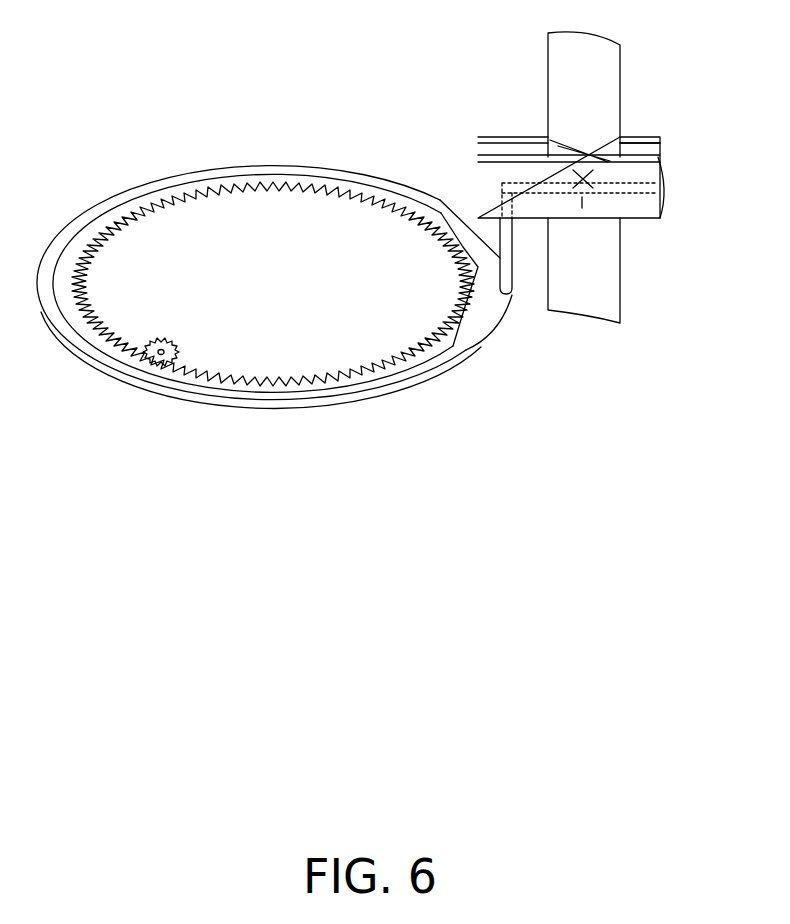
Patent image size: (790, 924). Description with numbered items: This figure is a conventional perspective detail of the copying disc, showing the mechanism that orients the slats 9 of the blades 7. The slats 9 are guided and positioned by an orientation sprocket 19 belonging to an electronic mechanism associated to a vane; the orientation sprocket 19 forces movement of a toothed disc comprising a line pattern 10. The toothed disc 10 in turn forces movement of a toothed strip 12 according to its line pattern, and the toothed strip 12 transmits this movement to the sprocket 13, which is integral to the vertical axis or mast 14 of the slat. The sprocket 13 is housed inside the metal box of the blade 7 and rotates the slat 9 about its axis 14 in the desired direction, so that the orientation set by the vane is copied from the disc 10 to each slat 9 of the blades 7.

The toothed disc comprising a line pattern 10 is at (157, 185).
The orientation sprocket 19 is at (152, 363).
The blades 7 is at (482, 168).
The axis or mast of the slat 14 is at (560, 148).
The sprocket integral to the slat axis 13 is at (633, 143).
The toothed strip 12 is at (597, 175).
The slats 9 is at (575, 288).